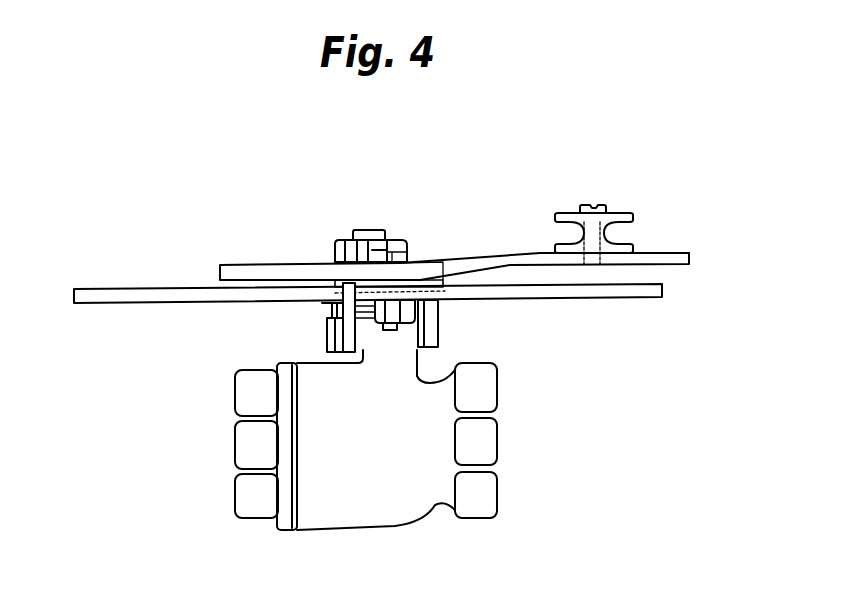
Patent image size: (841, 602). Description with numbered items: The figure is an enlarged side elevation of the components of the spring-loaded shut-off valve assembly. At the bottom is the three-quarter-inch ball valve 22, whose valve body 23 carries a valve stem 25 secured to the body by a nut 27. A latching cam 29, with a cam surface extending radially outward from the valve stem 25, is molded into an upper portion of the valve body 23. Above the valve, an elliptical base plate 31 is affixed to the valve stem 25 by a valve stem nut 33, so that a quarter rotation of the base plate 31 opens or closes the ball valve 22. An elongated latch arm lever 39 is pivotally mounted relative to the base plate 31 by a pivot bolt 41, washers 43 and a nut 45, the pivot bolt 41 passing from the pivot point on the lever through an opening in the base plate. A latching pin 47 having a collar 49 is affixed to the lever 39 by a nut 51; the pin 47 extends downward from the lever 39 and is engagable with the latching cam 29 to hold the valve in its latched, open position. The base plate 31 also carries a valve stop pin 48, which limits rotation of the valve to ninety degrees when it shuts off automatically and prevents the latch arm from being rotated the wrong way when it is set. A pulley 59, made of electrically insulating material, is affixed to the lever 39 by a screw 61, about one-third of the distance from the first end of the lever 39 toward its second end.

The ball valve 22 is at (219, 458).
The valve body 23 is at (497, 440).
The valve stem 25 is at (366, 230).
The nut 27 is at (323, 310).
The latching cam 29 is at (331, 356).
The base plate 31 is at (655, 297).
The valve stem nut 33 is at (338, 238).
The latch arm lever 39 is at (515, 252).
The pivot bolt 41 is at (401, 238).
The washers 43 is at (410, 258).
The nut 45 is at (388, 331).
The latching pin 47 is at (358, 354).
The valve stop pin 48 is at (438, 325).
The collar 49 is at (335, 279).
The nut 51 is at (400, 263).
The pulley 59 is at (562, 212).
The screw 61 is at (606, 204).